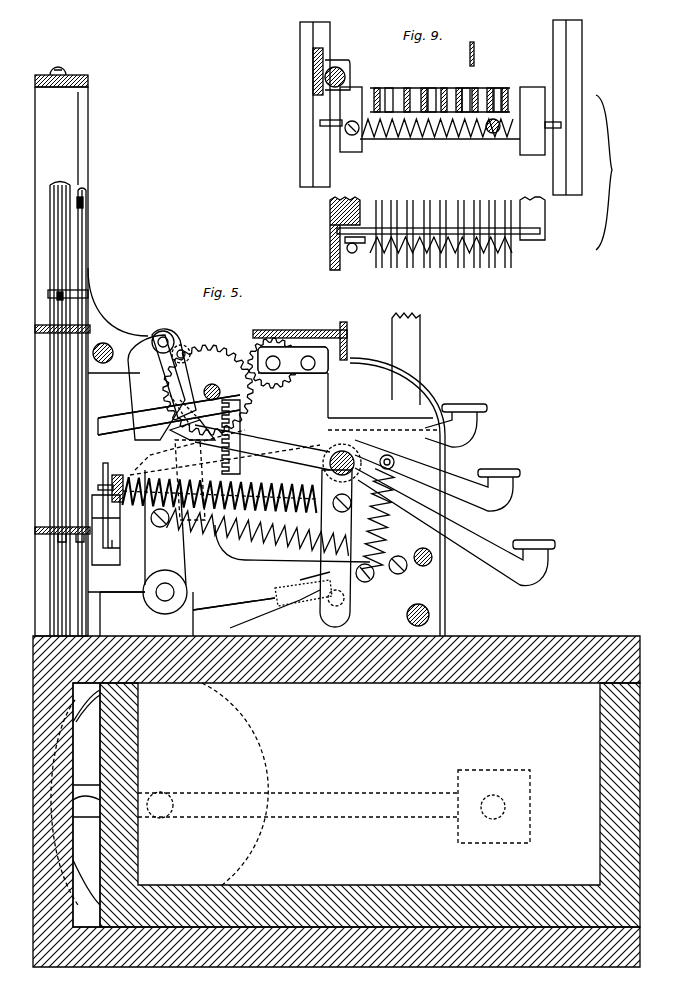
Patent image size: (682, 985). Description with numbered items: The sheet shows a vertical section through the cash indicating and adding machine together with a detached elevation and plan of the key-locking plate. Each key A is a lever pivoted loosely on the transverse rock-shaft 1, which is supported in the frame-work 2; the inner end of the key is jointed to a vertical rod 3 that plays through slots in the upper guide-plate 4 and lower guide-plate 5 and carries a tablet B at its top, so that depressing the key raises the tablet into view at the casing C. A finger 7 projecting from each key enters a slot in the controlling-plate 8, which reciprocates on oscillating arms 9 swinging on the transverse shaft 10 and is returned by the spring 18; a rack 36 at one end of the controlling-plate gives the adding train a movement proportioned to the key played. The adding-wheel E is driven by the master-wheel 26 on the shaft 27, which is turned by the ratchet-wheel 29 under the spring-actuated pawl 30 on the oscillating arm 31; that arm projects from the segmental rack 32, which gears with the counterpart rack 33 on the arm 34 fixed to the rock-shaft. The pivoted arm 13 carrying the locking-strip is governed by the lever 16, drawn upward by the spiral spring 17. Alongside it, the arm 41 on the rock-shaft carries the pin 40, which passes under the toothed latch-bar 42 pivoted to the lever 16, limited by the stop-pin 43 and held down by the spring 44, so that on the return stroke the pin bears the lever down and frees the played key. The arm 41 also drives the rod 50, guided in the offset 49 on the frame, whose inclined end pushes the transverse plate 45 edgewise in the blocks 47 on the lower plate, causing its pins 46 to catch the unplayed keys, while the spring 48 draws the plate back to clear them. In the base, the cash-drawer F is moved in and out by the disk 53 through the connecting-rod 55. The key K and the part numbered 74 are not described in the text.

In FIG. 5, the rock-shaft 1 is at (342, 451).
In FIG. 5, the frame-work 2 is at (36, 607).
In FIG. 9, the frame-work 2 is at (300, 60).
In FIG. 5, the vertical rod 3 is at (82, 222).
In FIG. 5, the upper guide-plate 4 is at (35, 328).
In FIG. 5, the lower guide-plate 5 is at (26, 530).
In FIG. 9, the lower guide-plate 5 is at (322, 122).
In FIG. 5, the finger 7 is at (156, 387).
In FIG. 5, the controlling-plate 8 is at (135, 412).
In FIG. 5, the oscillating arm 9 is at (165, 542).
In FIG. 5, the transverse shaft 10 is at (165, 600).
In FIG. 5, the pivoted arm 13 is at (190, 480).
In FIG. 5, the lever 16 is at (187, 594).
In FIG. 5, the spiral spring 17 is at (384, 512).
In FIG. 5, the spring 18 is at (260, 535).
In FIG. 5, the master-wheel 26 is at (214, 340).
In FIG. 5, the shaft 27 is at (223, 388).
In FIG. 5, the ratchet-wheel 29 is at (288, 371).
In FIG. 5, the spring-actuated pawl 30 is at (172, 370).
In FIG. 5, the oscillating arm 31 is at (208, 390).
In FIG. 5, the segmental rack 32 is at (204, 410).
In FIG. 5, the counterpart rack 33 is at (234, 437).
In FIG. 5, the arm 34 is at (230, 450).
In FIG. 5, the rack 36 is at (192, 425).
In FIG. 5, the pin 40 is at (275, 609).
In FIG. 5, the arm 41 is at (336, 548).
In FIG. 5, the latch-bar 42 is at (303, 593).
In FIG. 5, the stop-pin 43 is at (357, 595).
In FIG. 5, the spring 44 is at (311, 572).
In FIG. 5, the transverse plate 45 is at (123, 549).
In FIG. 9, the transverse plate 45 is at (510, 132).
In FIG. 9, the pin 46 is at (440, 167).
In FIG. 5, the block 47 is at (106, 530).
In FIG. 9, the block 47 is at (556, 212).
In FIG. 5, the spring 48 is at (219, 506).
In FIG. 9, the spring 48 is at (432, 132).
In FIG. 5, the offset 49 is at (124, 480).
In FIG. 9, the offset 49 is at (318, 72).
In FIG. 5, the rod 50 is at (104, 475).
In FIG. 9, the rod 50 is at (336, 70).
In FIG. 5, the disk 53 is at (88, 713).
In FIG. 5, the connecting-rod 55 is at (86, 800).
In FIG. 5, the screw 74 is at (410, 618).
In FIG. 5, the key A is at (323, 490).
In FIG. 9, the key A is at (469, 50).
In FIG. 5, the tablet B is at (78, 135).
In FIG. 5, the casing C is at (445, 582).
In FIG. 5, the adding-wheel E is at (300, 335).
In FIG. 5, the cash-drawer F is at (464, 789).
In FIG. 5, the key K is at (406, 359).